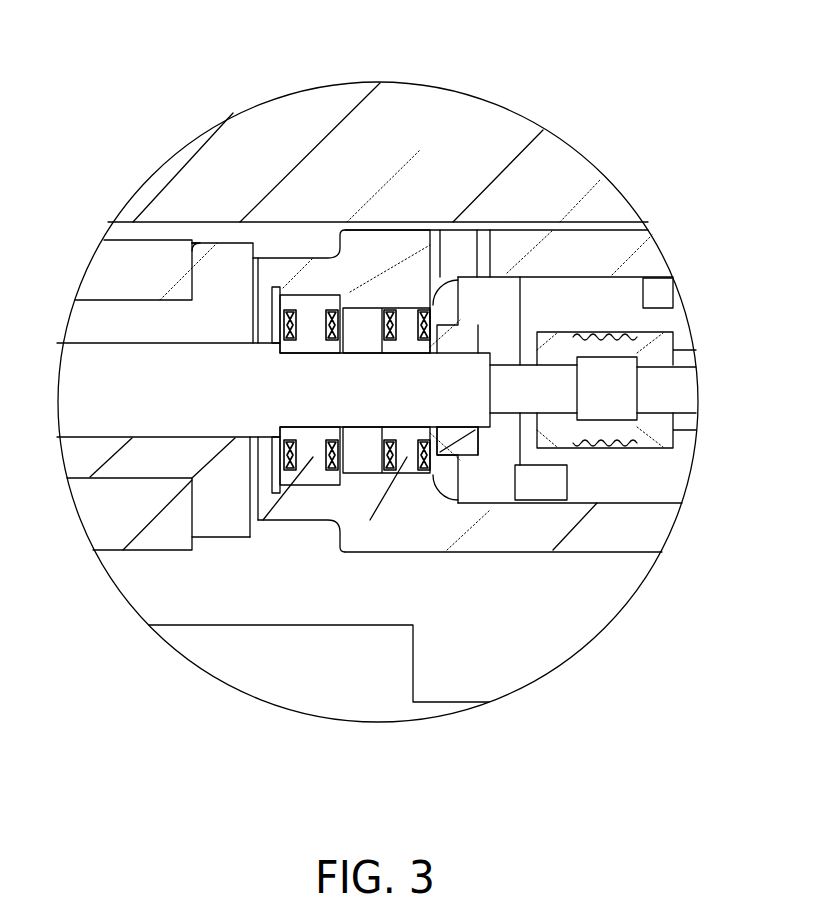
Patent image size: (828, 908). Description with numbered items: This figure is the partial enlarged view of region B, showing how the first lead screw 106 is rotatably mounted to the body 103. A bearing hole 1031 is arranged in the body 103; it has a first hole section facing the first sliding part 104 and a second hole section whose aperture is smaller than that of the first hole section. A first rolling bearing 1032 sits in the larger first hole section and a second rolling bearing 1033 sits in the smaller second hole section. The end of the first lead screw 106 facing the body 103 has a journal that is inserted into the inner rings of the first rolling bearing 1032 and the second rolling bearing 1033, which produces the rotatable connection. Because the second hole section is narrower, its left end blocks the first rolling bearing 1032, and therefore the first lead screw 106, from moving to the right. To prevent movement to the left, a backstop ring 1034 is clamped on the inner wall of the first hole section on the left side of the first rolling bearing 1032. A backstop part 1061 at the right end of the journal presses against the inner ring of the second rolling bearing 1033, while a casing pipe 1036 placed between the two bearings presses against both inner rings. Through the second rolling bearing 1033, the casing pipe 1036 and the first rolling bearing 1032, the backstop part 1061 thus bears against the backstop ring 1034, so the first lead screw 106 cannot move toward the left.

The partial enlarged region B is at (590, 163).
The body 103 is at (520, 263).
The first sliding part 104 is at (125, 517).
The first lead screw 106 is at (92, 378).
The bearing hole 1031 is at (262, 477).
The first rolling bearing 1032 is at (313, 457).
The second rolling bearing 1033 is at (407, 457).
The backstop ring 1034 is at (278, 315).
The casing pipe 1036 is at (360, 347).
The backstop part 1061 is at (460, 457).